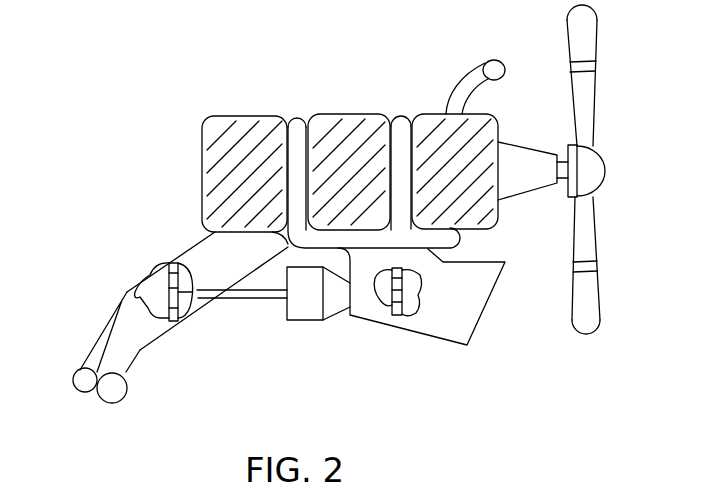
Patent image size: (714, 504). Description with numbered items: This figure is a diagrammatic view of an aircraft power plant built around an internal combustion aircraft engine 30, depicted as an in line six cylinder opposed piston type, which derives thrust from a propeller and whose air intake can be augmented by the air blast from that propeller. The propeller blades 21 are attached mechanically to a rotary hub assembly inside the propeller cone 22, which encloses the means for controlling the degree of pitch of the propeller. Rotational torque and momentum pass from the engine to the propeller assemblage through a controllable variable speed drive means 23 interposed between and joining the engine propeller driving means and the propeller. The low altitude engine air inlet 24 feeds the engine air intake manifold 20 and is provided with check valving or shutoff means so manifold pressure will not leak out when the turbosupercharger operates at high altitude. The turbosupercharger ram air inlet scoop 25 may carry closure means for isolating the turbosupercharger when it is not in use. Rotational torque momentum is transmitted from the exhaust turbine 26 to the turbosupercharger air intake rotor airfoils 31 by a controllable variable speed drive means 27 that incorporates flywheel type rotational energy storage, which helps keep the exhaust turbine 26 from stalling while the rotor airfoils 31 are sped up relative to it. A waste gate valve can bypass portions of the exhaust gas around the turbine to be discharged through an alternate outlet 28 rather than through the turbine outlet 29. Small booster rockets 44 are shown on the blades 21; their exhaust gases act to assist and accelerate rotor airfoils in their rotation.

The engine air intake manifold 20 is at (292, 120).
The propeller blades 21 is at (570, 327).
The propeller cone 22 is at (595, 153).
The controllable variable speed drive means 23 is at (513, 140).
The low altitude engine air inlet 24 is at (447, 90).
The turbosupercharger ram air inlet scoop 25 is at (452, 307).
The exhaust turbine 26 is at (168, 298).
The controllable variable speed drive means 27 is at (303, 322).
The alternate outlet 28 is at (102, 337).
The turbine outlet 29 is at (132, 377).
The aircraft engine 30 is at (353, 137).
The turbosupercharger air intake rotor airfoils 31 is at (393, 305).
The small booster rockets 44 is at (595, 62).